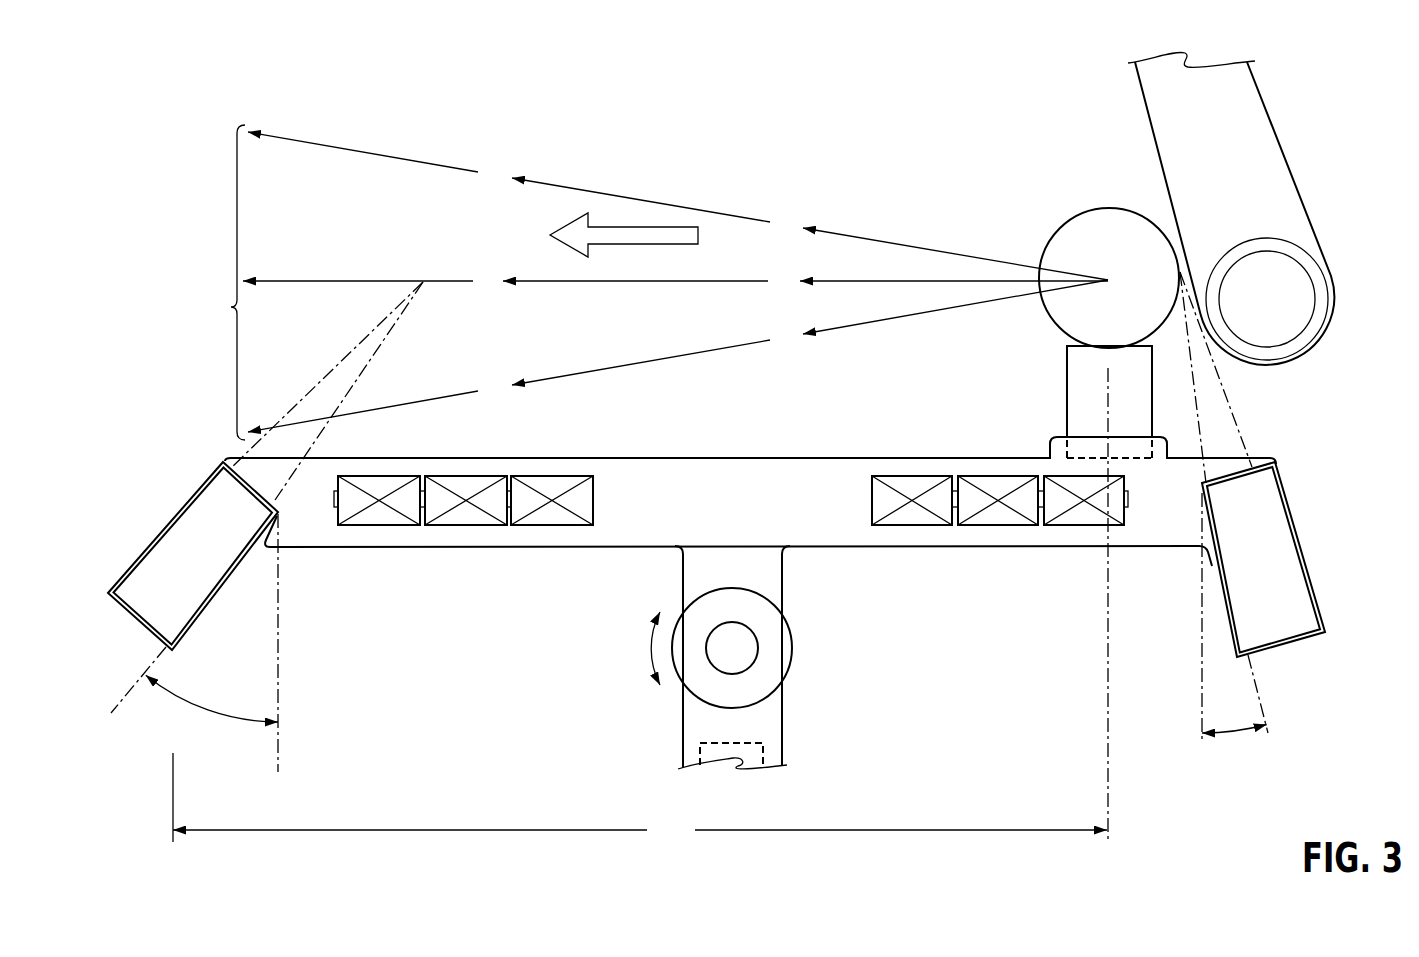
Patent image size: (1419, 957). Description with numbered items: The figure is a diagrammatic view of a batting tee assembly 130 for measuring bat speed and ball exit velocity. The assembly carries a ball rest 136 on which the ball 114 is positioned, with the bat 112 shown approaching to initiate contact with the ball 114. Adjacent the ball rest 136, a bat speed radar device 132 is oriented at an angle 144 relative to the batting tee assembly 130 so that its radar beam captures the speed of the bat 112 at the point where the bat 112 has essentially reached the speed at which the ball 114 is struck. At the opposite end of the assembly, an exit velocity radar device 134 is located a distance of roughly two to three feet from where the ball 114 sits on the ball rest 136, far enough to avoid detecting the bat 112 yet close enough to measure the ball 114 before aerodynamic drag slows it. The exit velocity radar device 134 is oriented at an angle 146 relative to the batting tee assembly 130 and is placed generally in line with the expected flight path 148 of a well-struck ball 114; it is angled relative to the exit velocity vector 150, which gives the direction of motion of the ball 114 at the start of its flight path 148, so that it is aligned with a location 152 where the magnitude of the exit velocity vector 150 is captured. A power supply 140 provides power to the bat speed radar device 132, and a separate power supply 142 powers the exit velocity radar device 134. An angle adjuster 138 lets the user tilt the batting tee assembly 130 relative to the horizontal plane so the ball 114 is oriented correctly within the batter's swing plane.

The bat 112 is at (1231, 188).
The ball 114 is at (1068, 224).
The batting tee assembly 130 is at (777, 449).
The bat speed radar device 132 is at (1297, 556).
The exit velocity radar device 134 is at (203, 600).
The ball rest 136 is at (1067, 360).
The angle adjuster 138 is at (782, 653).
The power supply 140 is at (999, 527).
The power supply 142 is at (469, 526).
The angle 144 is at (1232, 733).
The angle 146 is at (183, 697).
The flight path 148 is at (648, 282).
The exit velocity vector 150 is at (637, 227).
The location 152 is at (423, 282).